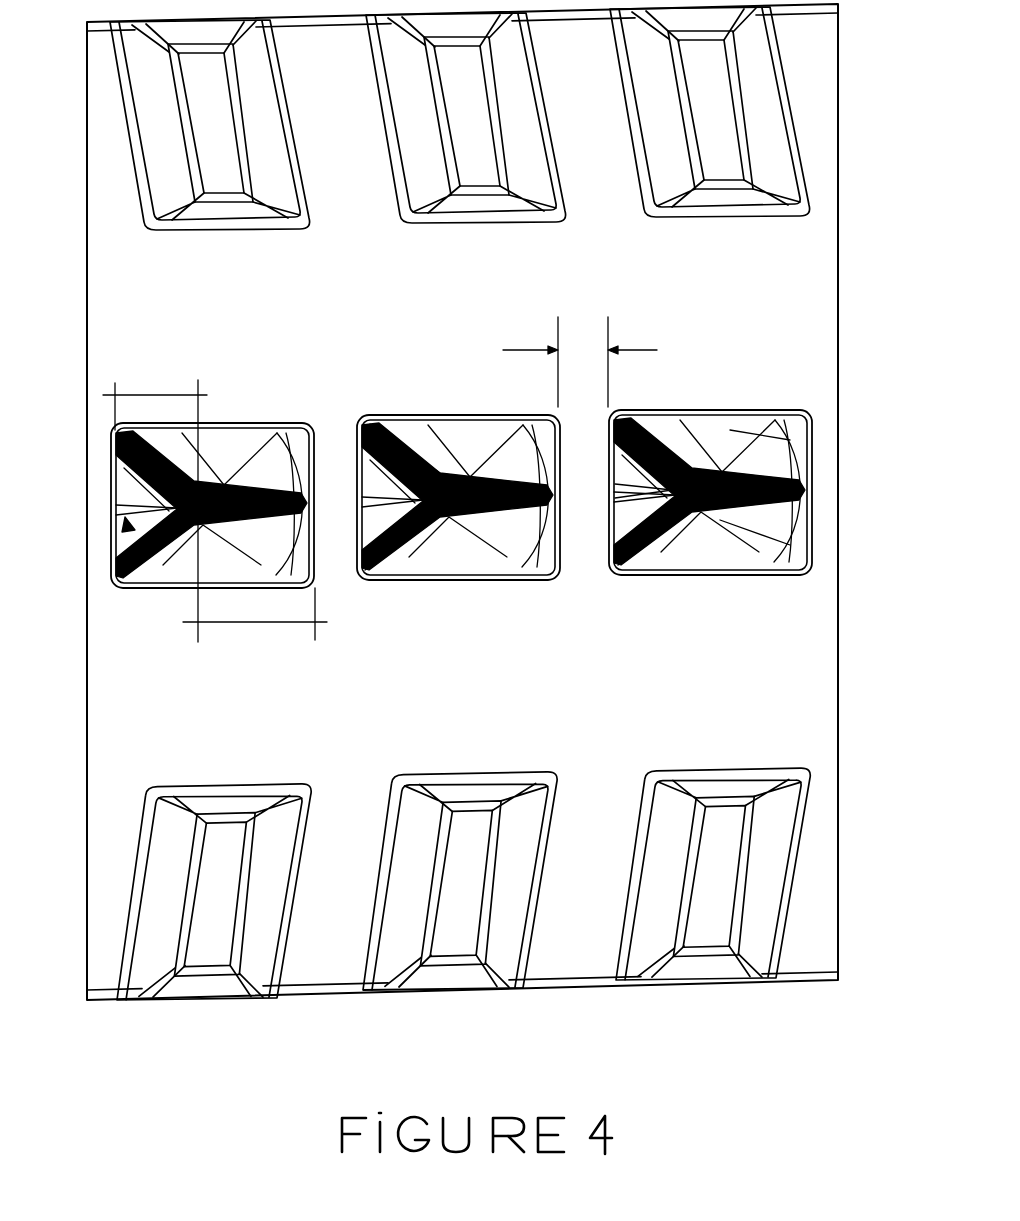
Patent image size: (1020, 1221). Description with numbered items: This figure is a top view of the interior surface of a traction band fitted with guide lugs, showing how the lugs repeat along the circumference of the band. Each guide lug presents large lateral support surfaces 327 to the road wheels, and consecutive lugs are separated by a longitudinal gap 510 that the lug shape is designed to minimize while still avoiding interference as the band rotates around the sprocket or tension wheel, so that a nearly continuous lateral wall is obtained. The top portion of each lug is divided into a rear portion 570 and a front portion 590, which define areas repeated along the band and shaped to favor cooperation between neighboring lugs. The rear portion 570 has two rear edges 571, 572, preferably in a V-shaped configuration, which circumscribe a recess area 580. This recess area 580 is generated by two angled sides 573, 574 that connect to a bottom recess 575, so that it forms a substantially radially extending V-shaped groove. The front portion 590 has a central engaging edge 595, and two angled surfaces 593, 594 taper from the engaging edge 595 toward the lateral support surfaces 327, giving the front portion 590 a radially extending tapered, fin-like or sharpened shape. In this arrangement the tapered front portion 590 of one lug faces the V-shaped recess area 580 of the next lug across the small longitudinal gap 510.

The lateral support surfaces 327 is at (723, 423).
The longitudinal gap 510 is at (621, 362).
The rear portion 570 is at (145, 395).
The rear edge 571 is at (393, 420).
The rear edge 572 is at (393, 570).
The angled side 573 is at (610, 495).
The angled side 574 is at (632, 517).
The bottom recess 575 is at (350, 430).
The recess area 580 is at (128, 526).
The front portion 590 is at (258, 622).
The angled surface 593 is at (747, 452).
The angled surface 594 is at (740, 528).
The central engaging edge 595 is at (503, 480).